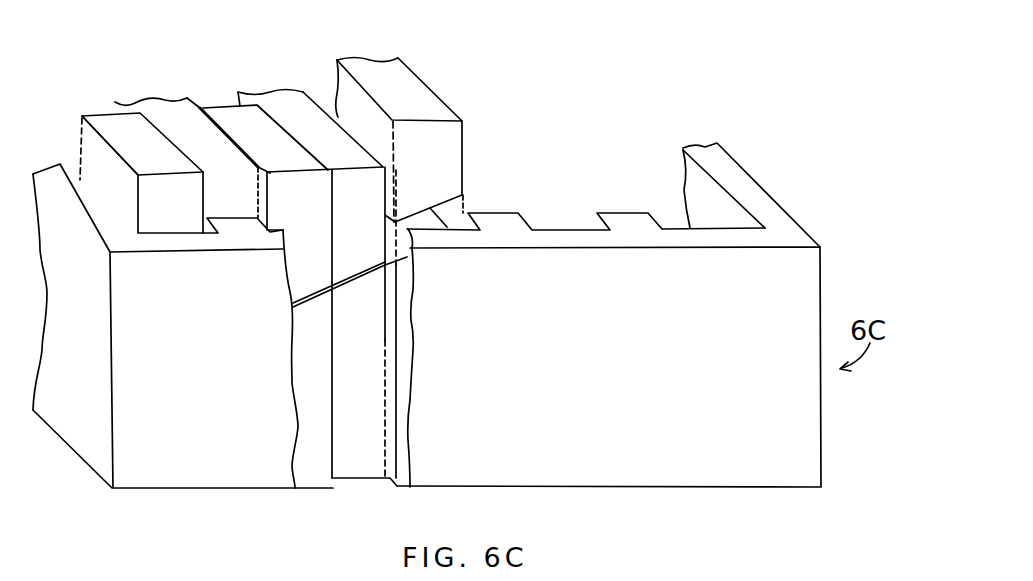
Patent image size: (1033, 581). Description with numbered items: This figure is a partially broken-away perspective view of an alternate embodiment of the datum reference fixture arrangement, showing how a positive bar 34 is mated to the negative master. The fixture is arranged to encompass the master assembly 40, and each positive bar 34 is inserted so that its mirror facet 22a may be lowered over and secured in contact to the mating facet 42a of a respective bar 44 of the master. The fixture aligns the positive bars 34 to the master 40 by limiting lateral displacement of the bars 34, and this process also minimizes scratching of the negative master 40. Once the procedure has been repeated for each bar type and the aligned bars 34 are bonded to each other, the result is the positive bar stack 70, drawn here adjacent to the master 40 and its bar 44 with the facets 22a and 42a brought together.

The mirror facet 22a is at (255, 284).
The positive bar 34 is at (300, 97).
The master assembly 40 is at (316, 492).
The mating facet 42a is at (350, 317).
The bar of the master 44 is at (370, 478).
The positive bar stack 70 is at (172, 87).